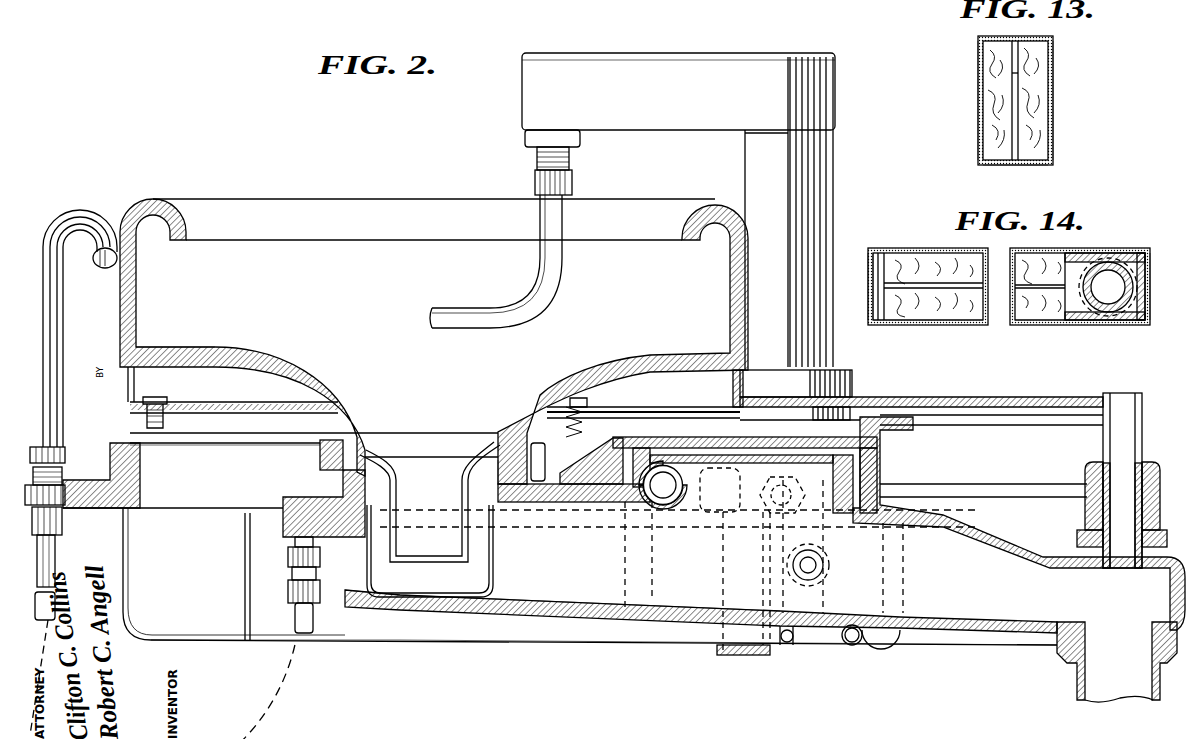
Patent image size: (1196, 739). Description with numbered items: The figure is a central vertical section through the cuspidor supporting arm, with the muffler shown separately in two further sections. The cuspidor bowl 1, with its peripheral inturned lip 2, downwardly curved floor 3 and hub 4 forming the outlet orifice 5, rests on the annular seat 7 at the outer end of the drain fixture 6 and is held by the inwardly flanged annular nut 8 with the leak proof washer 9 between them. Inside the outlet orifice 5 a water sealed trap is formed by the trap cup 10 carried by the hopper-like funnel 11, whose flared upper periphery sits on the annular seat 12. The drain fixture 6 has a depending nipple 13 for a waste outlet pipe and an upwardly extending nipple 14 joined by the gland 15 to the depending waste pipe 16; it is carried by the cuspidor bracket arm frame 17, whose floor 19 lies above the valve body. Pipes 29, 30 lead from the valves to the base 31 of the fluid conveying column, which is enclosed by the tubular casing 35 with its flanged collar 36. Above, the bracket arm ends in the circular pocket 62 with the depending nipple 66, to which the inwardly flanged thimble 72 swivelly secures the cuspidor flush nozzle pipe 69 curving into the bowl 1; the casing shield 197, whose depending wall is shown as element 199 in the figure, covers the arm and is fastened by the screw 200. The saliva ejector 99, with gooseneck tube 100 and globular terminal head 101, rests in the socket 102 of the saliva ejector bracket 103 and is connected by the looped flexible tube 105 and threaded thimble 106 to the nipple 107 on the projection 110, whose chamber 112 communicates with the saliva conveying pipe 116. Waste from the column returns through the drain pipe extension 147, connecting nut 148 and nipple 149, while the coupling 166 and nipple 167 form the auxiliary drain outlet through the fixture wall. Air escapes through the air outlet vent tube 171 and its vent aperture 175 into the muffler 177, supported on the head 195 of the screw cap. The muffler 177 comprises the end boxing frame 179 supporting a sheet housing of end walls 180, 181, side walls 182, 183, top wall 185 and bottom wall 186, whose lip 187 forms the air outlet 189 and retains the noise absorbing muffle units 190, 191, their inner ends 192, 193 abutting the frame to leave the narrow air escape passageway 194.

In FIG. 2, the cuspidor bowl 1 is at (128, 206).
In FIG. 2, the peripheral inturned lip 2 is at (183, 241).
In FIG. 2, the downwardly curved floor 3 is at (228, 349).
In FIG. 2, the hub 4 is at (372, 438).
In FIG. 2, the outlet orifice 5 is at (286, 426).
In FIG. 2, the drain fixture 6 is at (598, 623).
In FIG. 2, the annular seat 7 is at (515, 503).
In FIG. 2, the inwardly flanged annular nut 8 is at (320, 460).
In FIG. 2, the leak proof washer 9 is at (497, 472).
In FIG. 2, the trap cup 10 is at (447, 599).
In FIG. 2, the hopper-like funnel 11 is at (430, 502).
In FIG. 2, the annular seat 12 is at (500, 445).
In FIG. 2, the depending nipple 13 is at (1076, 688).
In FIG. 2, the upwardly extending nipple 14 is at (1160, 500).
In FIG. 2, the gland 15 is at (1150, 463).
In FIG. 2, the depending waste pipe 16 is at (1142, 412).
In FIG. 2, the cuspidor bracket arm frame 17 is at (160, 509).
In FIG. 2, the floor 19 is at (658, 418).
In FIG. 2, the pipe 29 is at (787, 645).
In FIG. 2, the pipe 30 is at (852, 646).
In FIG. 2, the base 31 is at (790, 440).
In FIG. 2, the tubular casing 35 is at (828, 200).
In FIG. 2, the flanged collar 36 is at (852, 385).
In FIG. 2, the circular pocket 62 is at (525, 137).
In FIG. 2, the depending nipple 66 is at (548, 158).
In FIG. 2, the cuspidor flush nozzle pipe 69 is at (528, 292).
In FIG. 2, the inwardly flanged thimble 72 is at (535, 190).
In FIG. 2, the saliva ejector 99 is at (66, 458).
In FIG. 2, the gooseneck tube 100 is at (58, 346).
In FIG. 2, the globular terminal head 101 is at (103, 269).
In FIG. 2, the socket 102 is at (50, 484).
In FIG. 2, the saliva ejector bracket 103 is at (66, 505).
In FIG. 2, the looped flexible tube 105 is at (57, 548).
In FIG. 2, the threaded thimble 106 is at (288, 599).
In FIG. 2, the nipple 107 is at (288, 575).
In FIG. 2, the projection 110 is at (283, 500).
In FIG. 2, the chamber 112 is at (283, 528).
In FIG. 2, the saliva conveying pipe 116 is at (720, 512).
In FIG. 2, the drain pipe extension 147 is at (820, 517).
In FIG. 2, the connecting nut 148 is at (820, 584).
In FIG. 2, the nipple 149 is at (823, 567).
In FIG. 2, the coupling 166 is at (680, 547).
In FIG. 2, the nipple 167 is at (667, 505).
In FIG. 2, the air outlet vent tube 171 is at (722, 592).
In FIG. 14, the air outlet vent tube 171 is at (1120, 290).
In FIG. 14, the vent aperture 175 is at (1112, 283).
In FIG. 2, the muffler 177 is at (562, 609).
In FIG. 14, the end boxing frame 179 is at (1130, 326).
In FIG. 2, the end wall 180 is at (785, 644).
In FIG. 14, the end wall 180 is at (868, 303).
In FIG. 2, the end wall 181 is at (247, 641).
In FIG. 2, the side wall 182 is at (515, 640).
In FIG. 13, the side wall 182 is at (980, 138).
In FIG. 14, the side wall 182 is at (1030, 326).
In FIG. 13, the side wall 183 is at (1050, 136).
In FIG. 14, the side wall 183 is at (888, 250).
In FIG. 13, the top wall 185 is at (1042, 35).
In FIG. 2, the bottom wall 186 is at (372, 641).
In FIG. 13, the bottom wall 186 is at (1040, 168).
In FIG. 14, the bottom wall 186 is at (875, 278).
In FIG. 13, the lip 187 is at (1014, 163).
In FIG. 14, the lip 187 is at (881, 328).
In FIG. 14, the air outlet 189 is at (866, 316).
In FIG. 13, the noise absorbing muffle unit 190 is at (990, 100).
In FIG. 14, the noise absorbing muffle unit 190 is at (906, 326).
In FIG. 13, the noise absorbing muffle unit 191 is at (1040, 97).
In FIG. 14, the noise absorbing muffle unit 191 is at (915, 262).
In FIG. 14, the inner end 192 is at (1070, 313).
In FIG. 14, the inner end 193 is at (1095, 250).
In FIG. 13, the air escape passageway 194 is at (1015, 73).
In FIG. 14, the air escape passageway 194 is at (960, 326).
In FIG. 2, the head 195 is at (735, 656).
In FIG. 2, the casing shield 197 is at (620, 50).
In FIG. 2, the tank wall 199 is at (650, 132).
In FIG. 2, the screw 200 is at (675, 56).